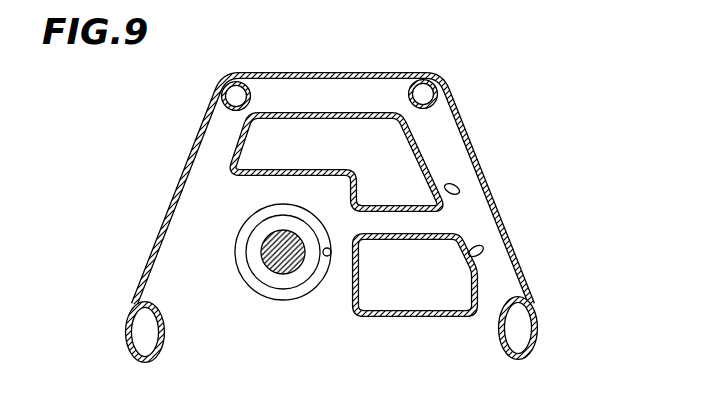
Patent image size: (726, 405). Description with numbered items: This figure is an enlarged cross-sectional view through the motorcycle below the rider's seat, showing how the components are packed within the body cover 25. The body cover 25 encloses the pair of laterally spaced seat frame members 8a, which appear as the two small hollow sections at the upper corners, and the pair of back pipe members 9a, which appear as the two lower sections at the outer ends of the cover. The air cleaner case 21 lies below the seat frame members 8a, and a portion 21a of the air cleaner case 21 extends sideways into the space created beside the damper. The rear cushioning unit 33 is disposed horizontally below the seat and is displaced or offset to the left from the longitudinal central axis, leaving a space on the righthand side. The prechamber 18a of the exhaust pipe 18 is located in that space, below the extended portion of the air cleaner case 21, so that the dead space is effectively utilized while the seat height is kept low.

The body cover 25 is at (325, 72).
The seat frame members 8a is at (250, 94).
The air cleaner case 21 is at (336, 112).
The tab of inner frame member 21a is at (445, 189).
The exhaust pipe 18 is at (402, 317).
The prechamber 18a is at (468, 251).
The rear cushioning unit 33 is at (253, 288).
The back pipe members 9a is at (128, 339).